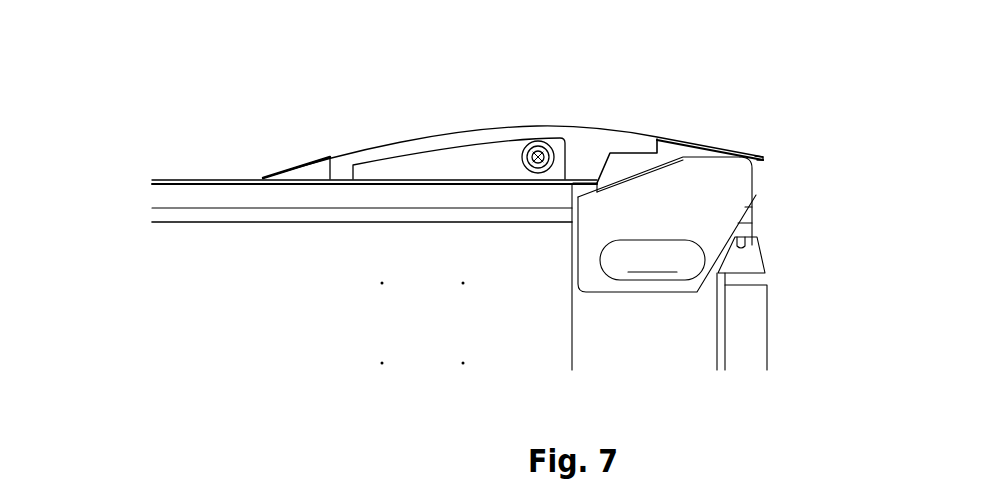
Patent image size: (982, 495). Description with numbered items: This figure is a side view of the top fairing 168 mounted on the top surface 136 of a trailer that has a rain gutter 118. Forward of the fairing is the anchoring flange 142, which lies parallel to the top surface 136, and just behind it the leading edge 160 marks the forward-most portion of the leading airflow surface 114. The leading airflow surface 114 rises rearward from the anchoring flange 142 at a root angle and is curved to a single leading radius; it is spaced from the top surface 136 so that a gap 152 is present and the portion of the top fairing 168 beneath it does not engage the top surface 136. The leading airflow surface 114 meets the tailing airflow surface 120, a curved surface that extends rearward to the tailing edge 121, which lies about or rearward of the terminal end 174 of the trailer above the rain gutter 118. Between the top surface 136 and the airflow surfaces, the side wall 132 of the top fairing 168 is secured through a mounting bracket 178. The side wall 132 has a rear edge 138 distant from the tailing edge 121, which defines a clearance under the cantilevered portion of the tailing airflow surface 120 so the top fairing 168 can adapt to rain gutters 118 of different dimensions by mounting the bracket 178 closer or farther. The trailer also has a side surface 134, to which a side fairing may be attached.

The leading airflow surface 114 is at (348, 142).
The rain gutter 118 is at (675, 172).
The tailing airflow surface 120 is at (643, 133).
The tailing edge 121 is at (762, 160).
The side wall 132 is at (585, 153).
The side surface 134 is at (446, 334).
The top surface 136 is at (166, 179).
The rear edge 138 is at (605, 165).
The anchoring flange 142 is at (238, 181).
The gap 152 is at (299, 173).
The leading edge 160 is at (264, 179).
The top fairing 168 is at (272, 113).
The terminal end 174 is at (750, 180).
The mounting bracket 178 is at (468, 167).